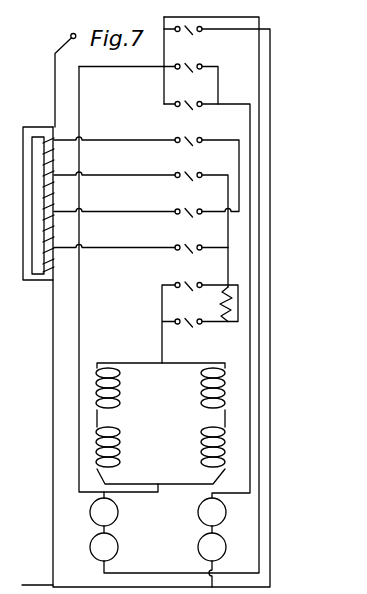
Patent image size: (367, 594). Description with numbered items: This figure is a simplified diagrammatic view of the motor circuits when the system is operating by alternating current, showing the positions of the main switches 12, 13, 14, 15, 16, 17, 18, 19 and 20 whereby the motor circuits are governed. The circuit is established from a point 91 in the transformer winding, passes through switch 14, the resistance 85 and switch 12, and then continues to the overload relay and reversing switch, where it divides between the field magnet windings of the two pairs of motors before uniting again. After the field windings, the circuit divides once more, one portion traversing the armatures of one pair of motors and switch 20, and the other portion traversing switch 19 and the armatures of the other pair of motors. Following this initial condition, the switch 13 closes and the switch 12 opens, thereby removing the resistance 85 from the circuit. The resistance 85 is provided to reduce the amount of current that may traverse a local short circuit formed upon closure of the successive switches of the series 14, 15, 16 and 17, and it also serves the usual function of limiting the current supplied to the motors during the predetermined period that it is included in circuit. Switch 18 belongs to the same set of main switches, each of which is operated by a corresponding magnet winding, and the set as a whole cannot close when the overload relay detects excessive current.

The main switch 12 is at (188, 336).
The main switch 13 is at (188, 299).
The main switch 14 is at (188, 261).
The main switch 15 is at (188, 225).
The main switch 16 is at (188, 188).
The main switch 17 is at (188, 153).
The main switch 18 is at (188, 116).
The main switch 19 is at (188, 80).
The main switch 20 is at (188, 41).
The resistance 85 is at (213, 316).
The point in the transformer winding 91 is at (53, 240).